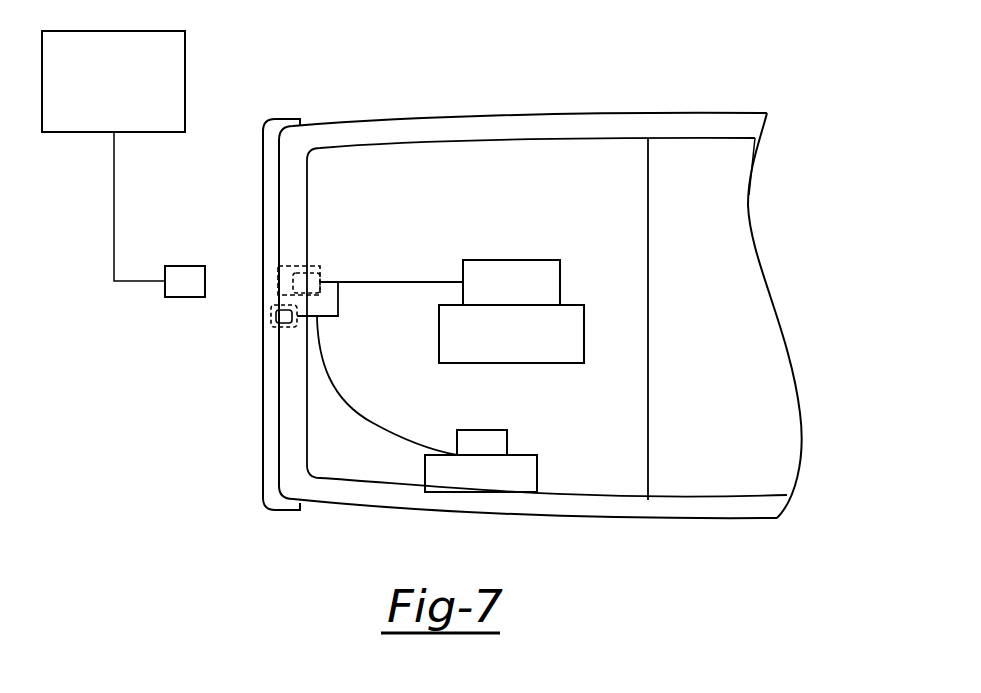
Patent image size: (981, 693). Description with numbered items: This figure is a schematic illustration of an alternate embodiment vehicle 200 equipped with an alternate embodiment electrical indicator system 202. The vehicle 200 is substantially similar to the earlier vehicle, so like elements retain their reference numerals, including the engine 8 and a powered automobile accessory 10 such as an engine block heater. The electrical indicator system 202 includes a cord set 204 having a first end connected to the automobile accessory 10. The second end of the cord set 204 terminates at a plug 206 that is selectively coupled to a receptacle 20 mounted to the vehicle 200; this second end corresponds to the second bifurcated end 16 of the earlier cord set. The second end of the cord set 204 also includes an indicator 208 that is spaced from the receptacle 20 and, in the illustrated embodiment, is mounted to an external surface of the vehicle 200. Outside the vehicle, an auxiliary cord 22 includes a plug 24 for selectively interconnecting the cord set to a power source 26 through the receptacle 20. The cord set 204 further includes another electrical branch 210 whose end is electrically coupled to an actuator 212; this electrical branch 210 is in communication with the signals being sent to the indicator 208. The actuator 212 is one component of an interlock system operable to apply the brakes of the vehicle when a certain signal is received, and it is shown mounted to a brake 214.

The engine 8 is at (580, 356).
The powered automobile accessory 10 is at (515, 263).
The second bifurcated end 16 is at (256, 262).
The receptacle 20 is at (290, 266).
The auxiliary cord 22 is at (106, 231).
The plug 24 is at (177, 298).
The power source 26 is at (187, 45).
The vehicle 200 is at (644, 76).
The electrical indicator system 202 is at (324, 208).
The cord set 204 is at (390, 275).
The plug 206 is at (313, 268).
The indicator 208 is at (262, 342).
The electrical branch 210 is at (372, 423).
The actuator 212 is at (507, 444).
The brake 214 is at (425, 478).